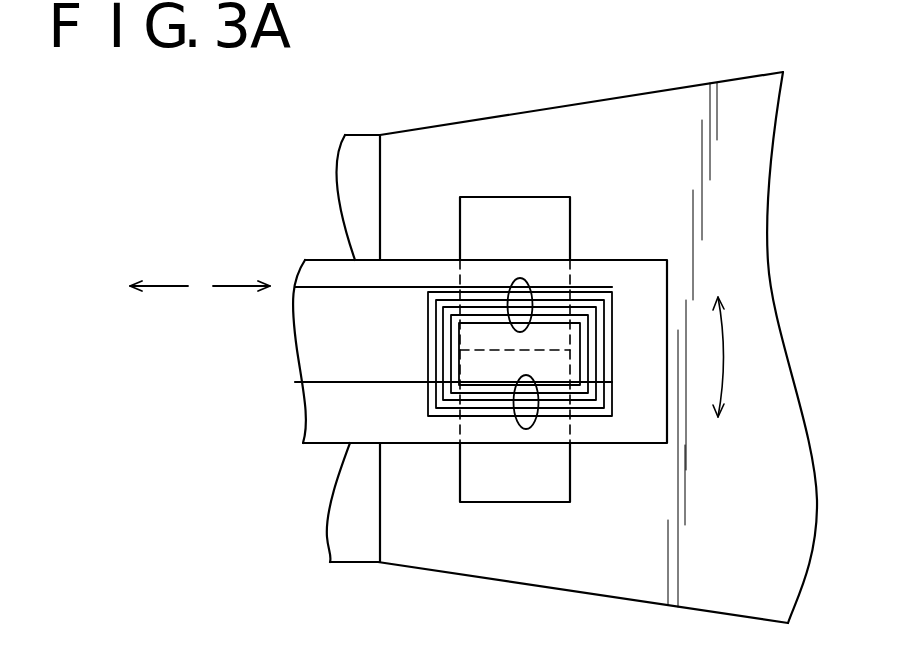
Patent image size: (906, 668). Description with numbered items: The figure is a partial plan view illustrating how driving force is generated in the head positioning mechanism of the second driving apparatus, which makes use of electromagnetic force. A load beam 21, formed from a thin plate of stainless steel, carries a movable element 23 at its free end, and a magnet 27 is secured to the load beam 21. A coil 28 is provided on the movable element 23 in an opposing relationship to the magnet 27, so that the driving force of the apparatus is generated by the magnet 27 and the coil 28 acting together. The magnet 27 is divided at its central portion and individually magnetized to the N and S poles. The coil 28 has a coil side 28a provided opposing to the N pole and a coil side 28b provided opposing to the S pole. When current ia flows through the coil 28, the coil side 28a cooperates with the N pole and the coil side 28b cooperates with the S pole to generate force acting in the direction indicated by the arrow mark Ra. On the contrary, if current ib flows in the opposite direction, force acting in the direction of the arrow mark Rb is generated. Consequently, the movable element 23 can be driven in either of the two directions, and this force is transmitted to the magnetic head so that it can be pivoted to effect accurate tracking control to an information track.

The load beam 21 is at (552, 567).
The movable element 23 is at (323, 408).
The magnet 27 is at (500, 503).
The coil 28 is at (588, 288).
The coil side 28a is at (510, 288).
The coil side 28b is at (534, 416).
The current ia is at (238, 285).
The current ib is at (168, 285).
The arrow mark Ra is at (717, 442).
The arrow mark Rb is at (718, 341).